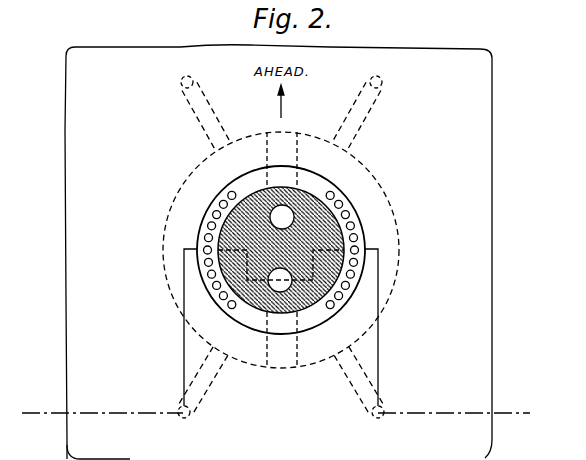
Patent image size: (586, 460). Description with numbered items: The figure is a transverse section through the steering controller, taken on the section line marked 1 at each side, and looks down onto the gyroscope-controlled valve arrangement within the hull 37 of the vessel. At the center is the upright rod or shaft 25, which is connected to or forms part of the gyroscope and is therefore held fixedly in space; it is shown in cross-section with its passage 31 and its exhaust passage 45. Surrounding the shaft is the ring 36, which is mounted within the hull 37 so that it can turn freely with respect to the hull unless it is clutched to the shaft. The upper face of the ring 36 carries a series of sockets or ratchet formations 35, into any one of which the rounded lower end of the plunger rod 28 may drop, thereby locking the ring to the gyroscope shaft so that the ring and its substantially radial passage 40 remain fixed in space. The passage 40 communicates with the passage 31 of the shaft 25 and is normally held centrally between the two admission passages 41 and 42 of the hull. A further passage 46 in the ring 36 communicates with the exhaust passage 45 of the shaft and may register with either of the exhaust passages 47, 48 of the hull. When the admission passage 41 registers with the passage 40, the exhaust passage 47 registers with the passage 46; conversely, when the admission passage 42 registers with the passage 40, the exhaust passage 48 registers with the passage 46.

The section line 1- 1 is at (276, 413).
The upright rod or shaft 25 is at (300, 204).
The plunger rod 28 is at (363, 246).
The passage 31 is at (276, 283).
The sockets or ratchet formations 35 is at (205, 237).
The ring 36 is at (183, 294).
The hull 37 is at (80, 245).
The passage 40 is at (289, 355).
The admission passage 41 is at (197, 385).
The admission passage 42 is at (365, 383).
The exhaust passage 45 is at (285, 215).
The passage 46 is at (272, 150).
The exhaust passage 47 is at (368, 113).
The exhaust passage 48 is at (197, 108).